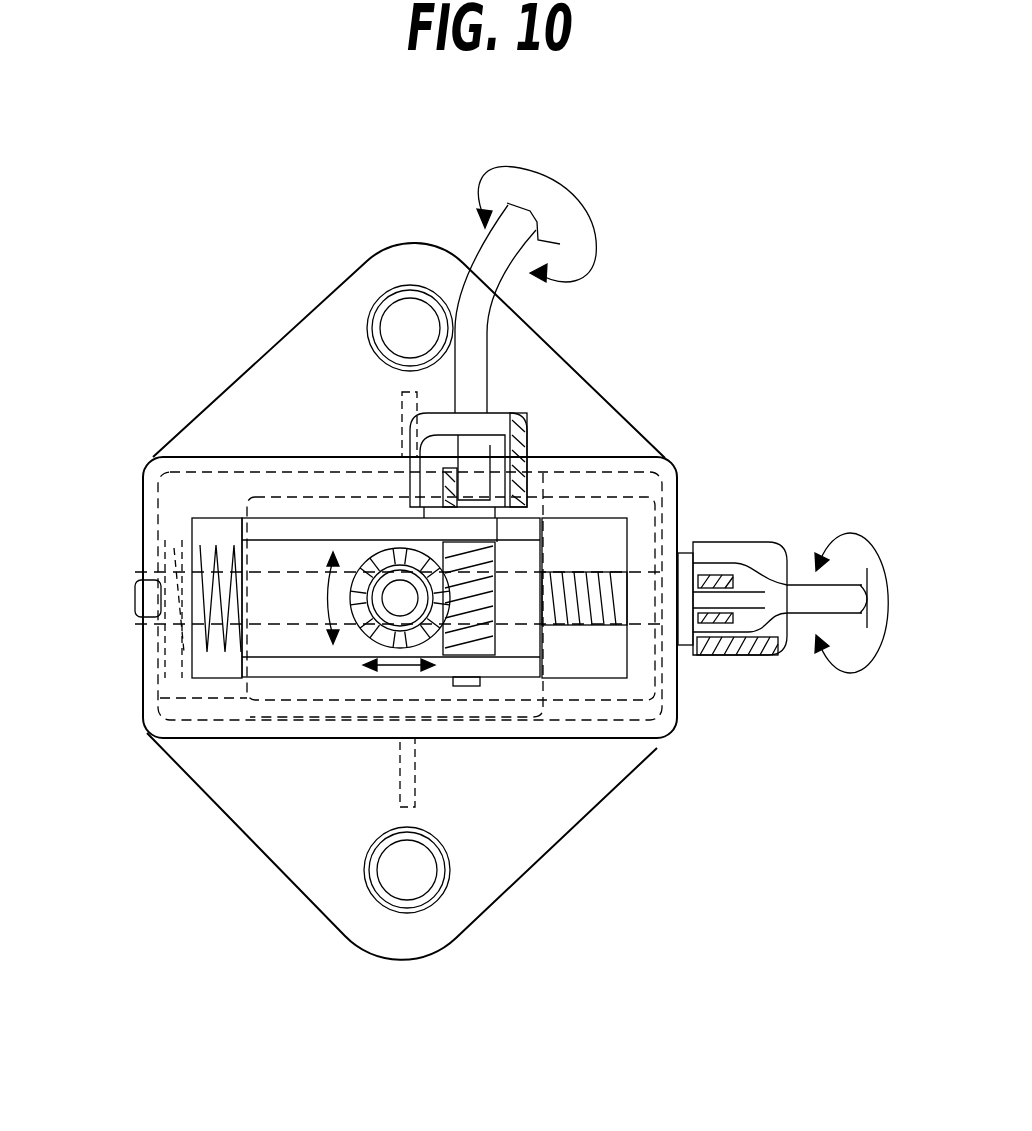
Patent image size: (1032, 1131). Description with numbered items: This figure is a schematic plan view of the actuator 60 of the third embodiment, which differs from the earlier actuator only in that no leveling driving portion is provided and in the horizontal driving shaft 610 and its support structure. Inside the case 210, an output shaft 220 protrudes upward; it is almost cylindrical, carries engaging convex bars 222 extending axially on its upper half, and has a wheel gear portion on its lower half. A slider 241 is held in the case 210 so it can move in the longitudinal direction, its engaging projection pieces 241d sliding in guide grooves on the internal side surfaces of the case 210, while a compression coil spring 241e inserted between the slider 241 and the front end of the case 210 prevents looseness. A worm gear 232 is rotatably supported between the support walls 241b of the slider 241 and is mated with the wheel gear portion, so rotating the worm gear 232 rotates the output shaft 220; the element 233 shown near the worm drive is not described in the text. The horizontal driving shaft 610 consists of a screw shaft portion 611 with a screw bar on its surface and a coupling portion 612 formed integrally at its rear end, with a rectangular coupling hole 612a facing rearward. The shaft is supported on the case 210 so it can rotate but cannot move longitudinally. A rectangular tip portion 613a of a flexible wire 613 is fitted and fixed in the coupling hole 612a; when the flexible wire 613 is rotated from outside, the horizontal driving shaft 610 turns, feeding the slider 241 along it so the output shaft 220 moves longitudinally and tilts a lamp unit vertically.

The actuator 60 is at (243, 338).
The case 210 is at (563, 388).
The output shaft 220 is at (385, 635).
The engaging convex bars 222 is at (373, 540).
The worm gear 232 is at (483, 583).
The lever 233 is at (493, 279).
The slider 241 is at (283, 638).
The support walls 241b is at (327, 525).
The engaging projection pieces 241d is at (317, 520).
The compression coil spring 241e is at (195, 550).
The horizontal driving shaft 610 is at (598, 640).
The screw shaft portion 611 is at (570, 640).
The coupling portion 612 is at (716, 580).
The coupling hole 612a is at (760, 565).
The flexible wire 613 is at (840, 607).
The tip portion 613a is at (715, 598).